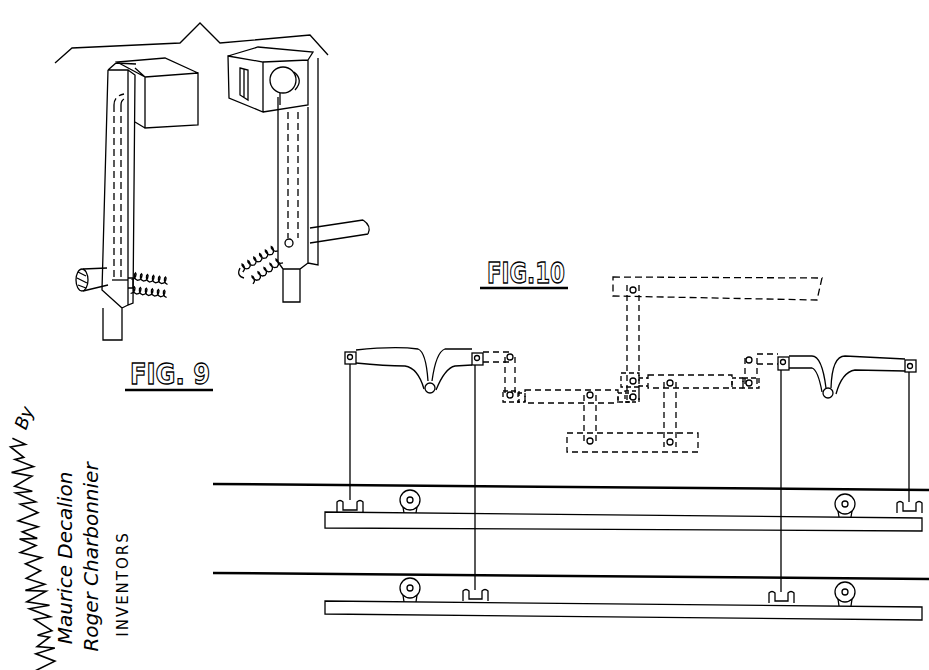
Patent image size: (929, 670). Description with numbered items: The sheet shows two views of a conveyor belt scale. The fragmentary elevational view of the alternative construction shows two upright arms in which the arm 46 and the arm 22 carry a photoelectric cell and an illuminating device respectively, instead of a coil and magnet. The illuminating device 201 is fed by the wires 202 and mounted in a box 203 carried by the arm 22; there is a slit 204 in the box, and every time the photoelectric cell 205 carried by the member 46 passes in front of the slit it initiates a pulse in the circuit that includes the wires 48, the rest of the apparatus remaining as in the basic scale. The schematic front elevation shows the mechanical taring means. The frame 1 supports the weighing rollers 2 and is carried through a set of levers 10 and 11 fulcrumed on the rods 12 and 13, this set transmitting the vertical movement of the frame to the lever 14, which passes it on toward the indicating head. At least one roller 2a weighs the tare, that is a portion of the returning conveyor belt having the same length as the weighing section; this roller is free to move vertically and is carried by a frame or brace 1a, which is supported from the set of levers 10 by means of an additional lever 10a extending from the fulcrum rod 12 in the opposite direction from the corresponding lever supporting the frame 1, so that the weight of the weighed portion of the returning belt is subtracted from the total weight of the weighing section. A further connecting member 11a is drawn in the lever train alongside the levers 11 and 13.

In FIG. 10, the frame 1 is at (337, 526).
In FIG. 10, the frame or brace 1a is at (353, 613).
In FIG. 10, the weighing rollers 2 is at (402, 494).
In FIG. 10, the tare roller 2a is at (402, 581).
In FIG. 10, the levers 10 is at (388, 353).
In FIG. 10, the additional lever 10a is at (462, 354).
In FIG. 10, the levers 11 is at (548, 390).
In FIG. 10, the connecting rod 11a is at (693, 378).
In FIG. 10, the fulcrum rod 12 is at (428, 393).
In FIG. 10, the fulcrum rod 13 is at (589, 396).
In FIG. 10, the lever 14 is at (732, 298).
In FIG. 9, the arm 22 is at (312, 140).
In FIG. 9, the arm or member 46 is at (102, 245).
In FIG. 9, the wires 48 is at (112, 200).
In FIG. 9, the illuminating device 201 is at (273, 112).
In FIG. 9, the wires 202 is at (287, 164).
In FIG. 9, the box 203 is at (252, 50).
In FIG. 9, the slit 204 is at (246, 92).
In FIG. 9, the photoelectric cell 205 is at (173, 108).